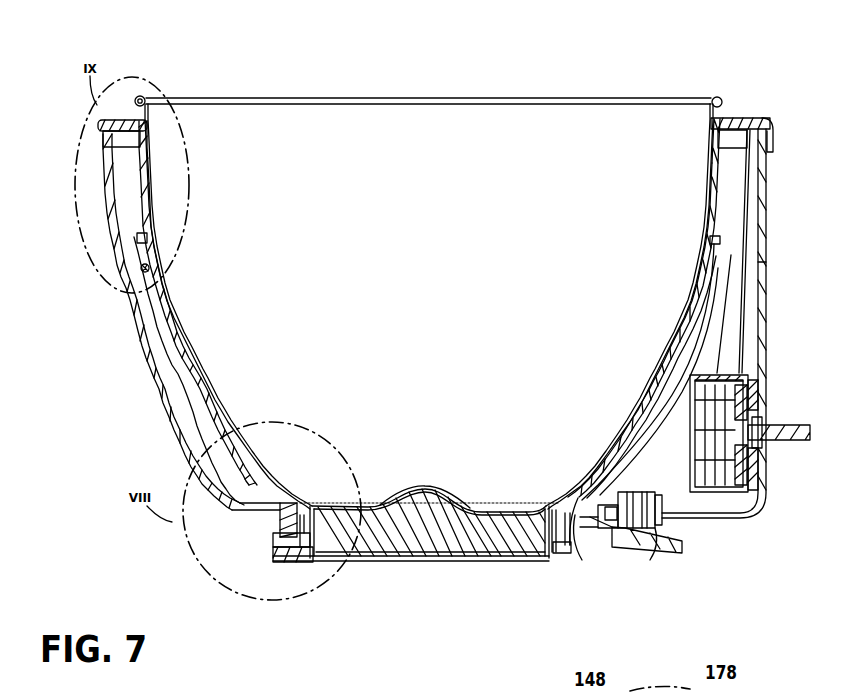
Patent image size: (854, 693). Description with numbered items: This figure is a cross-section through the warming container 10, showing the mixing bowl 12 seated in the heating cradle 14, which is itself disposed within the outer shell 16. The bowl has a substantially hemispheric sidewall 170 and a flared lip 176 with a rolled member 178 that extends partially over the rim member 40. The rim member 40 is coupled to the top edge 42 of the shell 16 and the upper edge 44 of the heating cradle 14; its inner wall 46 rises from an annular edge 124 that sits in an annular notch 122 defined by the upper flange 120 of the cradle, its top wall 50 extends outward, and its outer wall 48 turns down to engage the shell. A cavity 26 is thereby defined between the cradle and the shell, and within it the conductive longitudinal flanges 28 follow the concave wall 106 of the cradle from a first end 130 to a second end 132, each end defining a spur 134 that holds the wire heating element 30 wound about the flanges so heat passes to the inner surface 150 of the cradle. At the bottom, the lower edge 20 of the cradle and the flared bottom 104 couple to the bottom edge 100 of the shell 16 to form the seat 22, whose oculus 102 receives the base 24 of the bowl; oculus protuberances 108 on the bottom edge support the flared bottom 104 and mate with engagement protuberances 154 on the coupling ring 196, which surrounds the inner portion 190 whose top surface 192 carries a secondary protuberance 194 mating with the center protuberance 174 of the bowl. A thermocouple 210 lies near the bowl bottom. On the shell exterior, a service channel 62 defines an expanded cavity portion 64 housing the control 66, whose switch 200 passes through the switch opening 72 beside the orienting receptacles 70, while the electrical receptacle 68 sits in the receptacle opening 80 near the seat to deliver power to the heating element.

The warming container 10 is at (92, 494).
The mixing bowl 12 is at (465, 91).
The heating cradle 14 is at (713, 258).
The shell 16 is at (148, 427).
The lower edge 20 is at (283, 542).
The seat 22 is at (556, 554).
The base 24 is at (502, 583).
The cavity 26 is at (200, 442).
The conductive longitudinal flanges 28 is at (708, 297).
The wire heating element 30 is at (642, 553).
The rim member 40 is at (753, 112).
The top edge 42 is at (103, 138).
The upper edge 44 is at (155, 248).
The inner wall 46 is at (712, 137).
The outer wall 48 is at (737, 118).
The top wall 50 is at (769, 125).
The service channel 62 is at (769, 150).
The expanded cavity portion 64 is at (731, 203).
The control 66 is at (749, 448).
The electrical receptacle 68 is at (690, 556).
The orienting receptacles 70 is at (765, 403).
The switch opening 72 is at (760, 441).
The receptacle opening 80 is at (704, 518).
The bottom edge 100 is at (283, 550).
The oculus 102 is at (302, 540).
The flared bottom 104 is at (610, 549).
The concave wall 106 is at (175, 375).
The oculus protuberances 108 is at (583, 545).
The upper flange 120 is at (714, 244).
The annular notch 122 is at (721, 240).
The annular edge 124 is at (719, 220).
The first end 130 is at (165, 295).
The second end 132 is at (262, 520).
The spur 134 is at (760, 267).
The inner surface 150 is at (190, 350).
The engagement protuberances 154 is at (342, 545).
The sidewall 170 is at (363, 195).
The center protuberance 174 is at (473, 552).
The flared lip 176 is at (438, 98).
The rolled member 178 is at (133, 107).
The inner portion 190 is at (513, 540).
The top surface 192 is at (440, 505).
The secondary protuberance 194 is at (417, 563).
The coupling ring 196 is at (570, 548).
The switch 200 is at (789, 425).
The thermocouple 210 is at (380, 552).